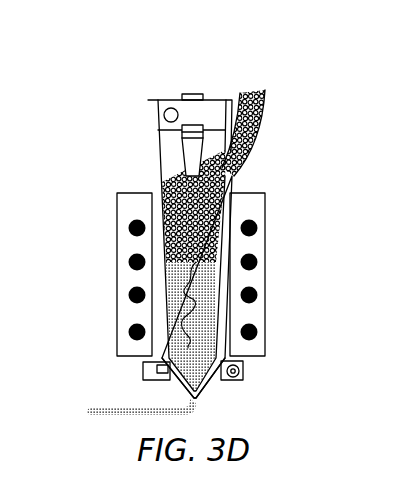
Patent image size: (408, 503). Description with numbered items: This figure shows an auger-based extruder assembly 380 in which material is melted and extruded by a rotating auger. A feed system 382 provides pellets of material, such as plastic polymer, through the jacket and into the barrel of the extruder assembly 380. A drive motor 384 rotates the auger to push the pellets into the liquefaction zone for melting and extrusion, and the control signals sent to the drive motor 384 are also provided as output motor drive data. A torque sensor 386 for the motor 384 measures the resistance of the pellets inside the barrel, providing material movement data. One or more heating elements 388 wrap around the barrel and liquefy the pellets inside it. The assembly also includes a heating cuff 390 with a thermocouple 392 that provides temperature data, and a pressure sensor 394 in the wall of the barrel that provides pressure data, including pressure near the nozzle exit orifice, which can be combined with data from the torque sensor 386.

The auger-based extruder assembly 380 is at (113, 88).
The feed system 382 is at (254, 82).
The drive motor 384 is at (214, 100).
The torque sensor 386 is at (170, 107).
The heating elements 388 is at (128, 228).
The heating cuff 390 is at (243, 368).
The thermocouple 392 is at (243, 379).
The pressure sensor 394 is at (143, 372).